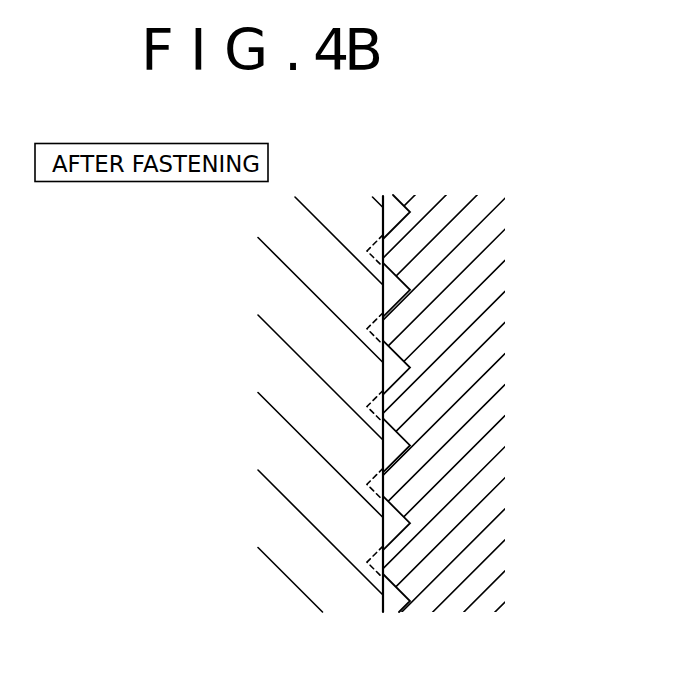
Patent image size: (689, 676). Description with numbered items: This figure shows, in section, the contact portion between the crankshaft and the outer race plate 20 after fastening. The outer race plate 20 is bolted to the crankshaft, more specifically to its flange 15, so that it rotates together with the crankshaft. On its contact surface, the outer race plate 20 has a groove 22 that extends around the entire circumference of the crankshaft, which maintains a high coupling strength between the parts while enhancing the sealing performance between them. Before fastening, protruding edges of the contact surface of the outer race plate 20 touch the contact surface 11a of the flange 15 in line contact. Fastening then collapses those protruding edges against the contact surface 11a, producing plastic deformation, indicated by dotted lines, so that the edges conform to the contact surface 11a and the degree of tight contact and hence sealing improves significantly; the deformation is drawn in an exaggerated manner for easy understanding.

The outer race plate 20 is at (495, 345).
The contact surface of the crankshaft 11a is at (383, 293).
The groove 22 is at (383, 370).
The flange 15 is at (277, 460).